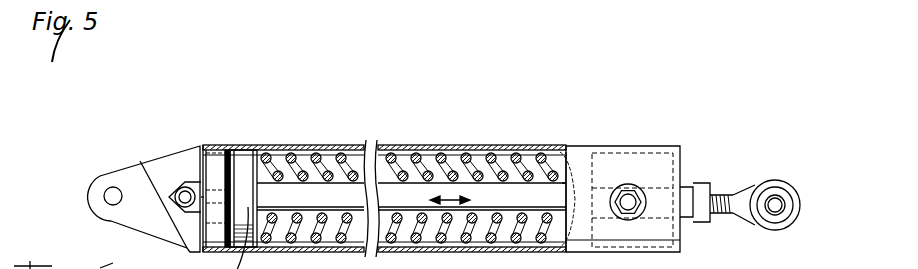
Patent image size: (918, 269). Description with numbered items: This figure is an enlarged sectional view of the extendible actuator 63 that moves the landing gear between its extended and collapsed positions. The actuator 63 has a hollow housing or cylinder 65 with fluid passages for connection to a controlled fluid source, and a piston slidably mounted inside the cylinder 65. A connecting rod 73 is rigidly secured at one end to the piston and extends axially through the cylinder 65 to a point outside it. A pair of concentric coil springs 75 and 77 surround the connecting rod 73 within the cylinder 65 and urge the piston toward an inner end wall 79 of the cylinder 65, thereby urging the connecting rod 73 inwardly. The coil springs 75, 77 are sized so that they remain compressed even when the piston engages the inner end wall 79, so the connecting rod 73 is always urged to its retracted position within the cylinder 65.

The extendible actuator 63 is at (398, 133).
The cylinder 65 is at (268, 148).
The connecting rod 73 is at (411, 196).
The coil spring 75 is at (440, 162).
The coil spring 77 is at (512, 177).
The inner end wall 79 is at (222, 250).